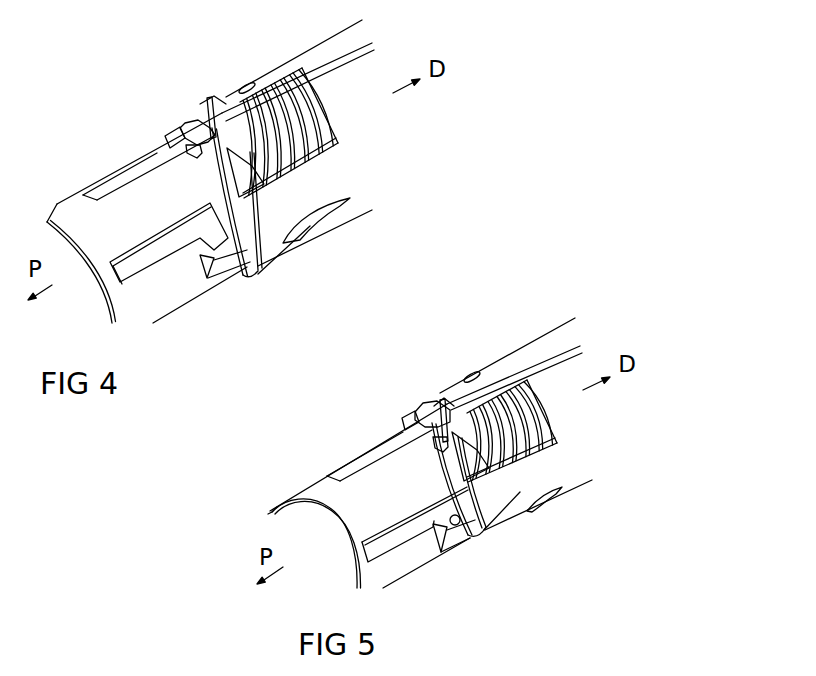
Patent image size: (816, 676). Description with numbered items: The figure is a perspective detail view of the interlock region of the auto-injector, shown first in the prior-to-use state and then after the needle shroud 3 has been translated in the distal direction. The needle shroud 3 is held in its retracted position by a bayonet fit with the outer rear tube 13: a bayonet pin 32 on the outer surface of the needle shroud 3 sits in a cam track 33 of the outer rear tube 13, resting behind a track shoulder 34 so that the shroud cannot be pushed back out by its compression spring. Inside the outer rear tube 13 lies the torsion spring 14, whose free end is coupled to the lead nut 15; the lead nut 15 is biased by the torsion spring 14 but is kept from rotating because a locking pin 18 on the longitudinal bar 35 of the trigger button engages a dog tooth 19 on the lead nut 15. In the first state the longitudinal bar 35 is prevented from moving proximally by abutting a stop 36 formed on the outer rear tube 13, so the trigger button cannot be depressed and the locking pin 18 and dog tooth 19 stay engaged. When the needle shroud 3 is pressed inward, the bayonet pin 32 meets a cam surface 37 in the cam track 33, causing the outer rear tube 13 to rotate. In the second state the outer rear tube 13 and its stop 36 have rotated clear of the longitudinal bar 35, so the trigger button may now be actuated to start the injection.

In FIG. 4, the needle shroud 3 is at (85, 270).
In FIG. 5, the needle shroud 3 is at (337, 547).
In FIG. 4, the outer rear tube 13 is at (65, 207).
In FIG. 5, the outer rear tube 13 is at (316, 495).
In FIG. 4, the torsion spring 14 is at (294, 98).
In FIG. 5, the torsion spring 14 is at (528, 387).
In FIG. 4, the lead nut 15 is at (272, 276).
In FIG. 5, the lead nut 15 is at (407, 422).
In FIG. 4, the locking pin 18 is at (213, 137).
In FIG. 5, the locking pin 18 is at (447, 423).
In FIG. 4, the dog tooth 19 is at (213, 138).
In FIG. 5, the dog tooth 19 is at (445, 423).
In FIG. 4, the bayonet pin 32 is at (212, 276).
In FIG. 5, the bayonet pin 32 is at (462, 532).
In FIG. 4, the cam track 33 is at (166, 236).
In FIG. 5, the cam track 33 is at (400, 527).
In FIG. 4, the track shoulder 34 is at (190, 257).
In FIG. 5, the track shoulder 34 is at (428, 543).
In FIG. 4, the longitudinal bar 35 is at (243, 92).
In FIG. 5, the longitudinal bar 35 is at (470, 381).
In FIG. 4, the stop 36 is at (190, 127).
In FIG. 5, the stop 36 is at (427, 408).
In FIG. 4, the cam surface 37 is at (234, 276).
In FIG. 5, the cam surface 37 is at (440, 553).